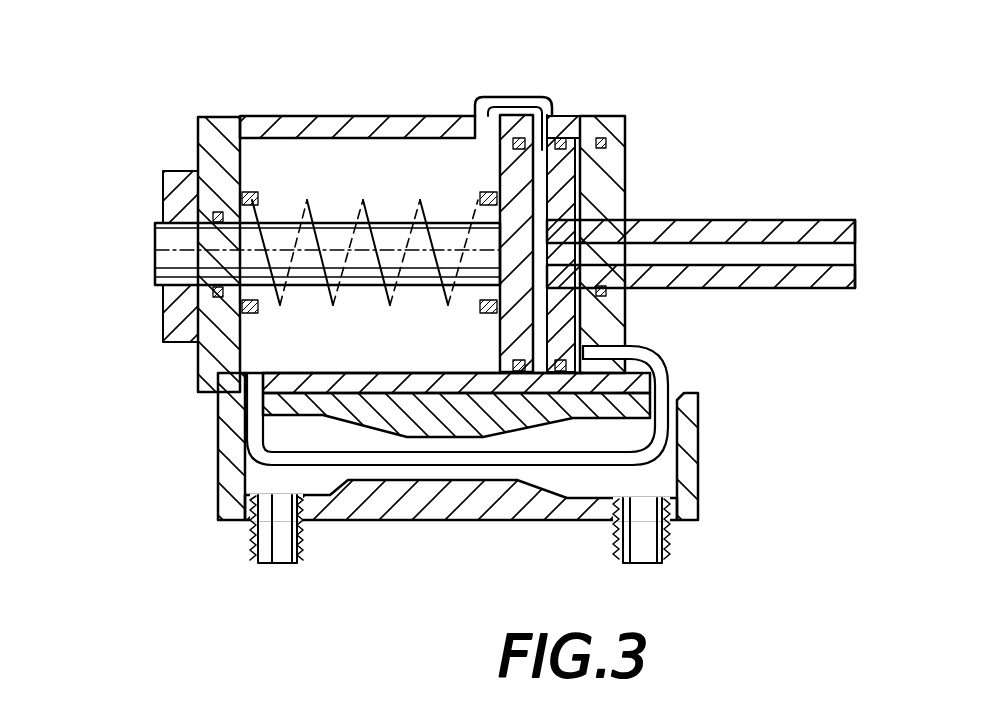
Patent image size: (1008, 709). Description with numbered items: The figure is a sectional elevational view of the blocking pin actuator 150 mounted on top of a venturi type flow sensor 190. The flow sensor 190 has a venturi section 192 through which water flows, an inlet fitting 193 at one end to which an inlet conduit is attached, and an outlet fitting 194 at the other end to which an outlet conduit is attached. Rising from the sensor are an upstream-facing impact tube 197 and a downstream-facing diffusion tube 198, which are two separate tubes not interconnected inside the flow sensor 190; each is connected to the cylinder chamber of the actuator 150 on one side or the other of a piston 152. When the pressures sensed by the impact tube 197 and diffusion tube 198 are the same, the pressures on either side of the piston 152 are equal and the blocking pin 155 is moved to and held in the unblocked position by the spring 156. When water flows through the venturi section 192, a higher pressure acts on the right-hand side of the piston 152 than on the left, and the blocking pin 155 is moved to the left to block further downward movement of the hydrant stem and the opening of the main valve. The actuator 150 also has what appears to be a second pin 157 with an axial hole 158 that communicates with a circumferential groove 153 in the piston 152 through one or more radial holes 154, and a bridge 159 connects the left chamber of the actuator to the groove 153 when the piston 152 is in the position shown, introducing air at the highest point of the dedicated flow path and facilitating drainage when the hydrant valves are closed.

The blocking pin actuator 150 is at (238, 117).
The piston 152 is at (550, 178).
The circumferential groove 153 is at (548, 128).
The radial holes 154 is at (545, 198).
The blocking pin 155 is at (162, 250).
The spring 156 is at (366, 208).
The second pin 157 is at (777, 220).
The axial hole 158 is at (847, 250).
The bridge 159 is at (527, 113).
The flow sensor 190 is at (690, 447).
The venturi section 192 is at (480, 490).
The inlet fitting 193 is at (250, 543).
The outlet fitting 194 is at (672, 547).
The impact tube 197 is at (657, 358).
The diffusion tube 198 is at (243, 433).